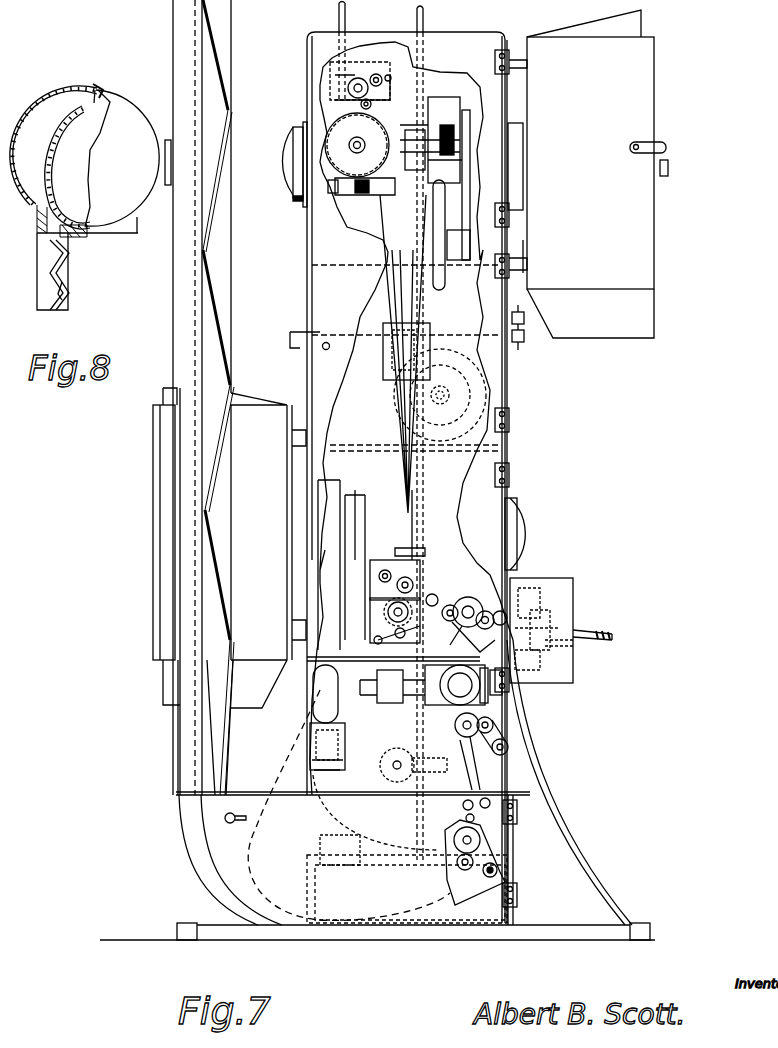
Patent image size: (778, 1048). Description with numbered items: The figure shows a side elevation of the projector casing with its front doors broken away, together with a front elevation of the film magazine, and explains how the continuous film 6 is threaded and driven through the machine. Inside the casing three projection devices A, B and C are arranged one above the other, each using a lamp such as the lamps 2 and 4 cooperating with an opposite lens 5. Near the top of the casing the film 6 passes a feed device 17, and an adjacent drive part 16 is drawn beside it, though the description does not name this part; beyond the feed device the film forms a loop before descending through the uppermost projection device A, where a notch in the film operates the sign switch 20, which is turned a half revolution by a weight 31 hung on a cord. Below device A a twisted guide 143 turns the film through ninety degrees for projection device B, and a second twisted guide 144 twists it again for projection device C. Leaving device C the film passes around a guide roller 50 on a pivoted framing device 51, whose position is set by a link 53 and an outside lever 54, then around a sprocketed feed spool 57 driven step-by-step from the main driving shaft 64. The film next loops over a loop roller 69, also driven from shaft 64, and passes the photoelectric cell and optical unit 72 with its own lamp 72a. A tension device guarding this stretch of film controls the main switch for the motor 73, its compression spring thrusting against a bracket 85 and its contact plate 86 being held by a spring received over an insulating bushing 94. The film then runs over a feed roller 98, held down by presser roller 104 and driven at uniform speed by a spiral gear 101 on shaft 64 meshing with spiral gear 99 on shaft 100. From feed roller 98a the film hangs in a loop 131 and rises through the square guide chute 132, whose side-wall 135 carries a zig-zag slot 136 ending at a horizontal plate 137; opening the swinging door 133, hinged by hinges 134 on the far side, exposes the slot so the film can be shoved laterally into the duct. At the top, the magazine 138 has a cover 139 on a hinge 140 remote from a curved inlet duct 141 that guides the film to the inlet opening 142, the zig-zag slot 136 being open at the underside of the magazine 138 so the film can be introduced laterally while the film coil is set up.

In FIG. 7, the lamp 2 is at (160, 540).
In FIG. 7, the lamp 4 is at (650, 122).
In FIG. 7, the lens 5 is at (284, 150).
In FIG. 7, the film 6 is at (346, 18).
In FIG. 7, the drive unit 16 is at (368, 64).
In FIG. 7, the feed device 17 is at (357, 113).
In FIG. 7, the sign switch 20 is at (438, 140).
In FIG. 7, the weight 31 is at (418, 214).
In FIG. 7, the guide roller 50 is at (395, 580).
In FIG. 7, the framing device 51 is at (438, 562).
In FIG. 7, the link 53 is at (440, 600).
In FIG. 7, the lever 54 is at (592, 630).
In FIG. 7, the feed spool 57 is at (395, 621).
In FIG. 7, the main driving shaft 64 is at (424, 18).
In FIG. 7, the loop roller 69 is at (470, 597).
In FIG. 7, the photoelectric cell and optical unit 72 is at (390, 706).
In FIG. 7, the lamp 72a is at (310, 700).
In FIG. 7, the motor 73 is at (338, 808).
In FIG. 7, the bracket 85 is at (533, 590).
In FIG. 7, the contact plate 86 is at (570, 612).
In FIG. 7, the insulating bushing 94 is at (573, 648).
In FIG. 7, the feed roller 98 is at (470, 758).
In FIG. 7, the feed roller 98a is at (505, 852).
In FIG. 7, the spiral gear 99 is at (496, 705).
In FIG. 7, the shaft 100 is at (497, 753).
In FIG. 7, the spiral gear 101 is at (413, 757).
In FIG. 7, the presser roller 104 is at (502, 731).
In FIG. 7, the loop 131 is at (400, 907).
In FIG. 7, the guide chute 132 is at (172, 740).
In FIG. 7, the swinging door 133 is at (228, 845).
In FIG. 7, the hinges 134 is at (515, 902).
In FIG. 7, the side-wall 135 is at (232, 756).
In FIG. 8, the zig-zag slot 136 is at (60, 262).
In FIG. 7, the zig-zag slot 136 is at (220, 302).
In FIG. 8, the horizontal plate 137 is at (64, 290).
In FIG. 7, the horizontal plate 137 is at (192, 793).
In FIG. 8, the magazine 138 is at (134, 100).
In FIG. 8, the cover 139 is at (141, 130).
In FIG. 8, the hinge 140 is at (165, 172).
In FIG. 8, the curved inlet duct 141 is at (52, 118).
In FIG. 8, the inlet opening 142 is at (97, 86).
In FIG. 7, the twisted guide 143 is at (412, 314).
In FIG. 7, the twisted guide 144 is at (410, 470).
In FIG. 7, the projection device A is at (534, 164).
In FIG. 7, the projection device B is at (529, 401).
In FIG. 7, the projection device C is at (542, 523).